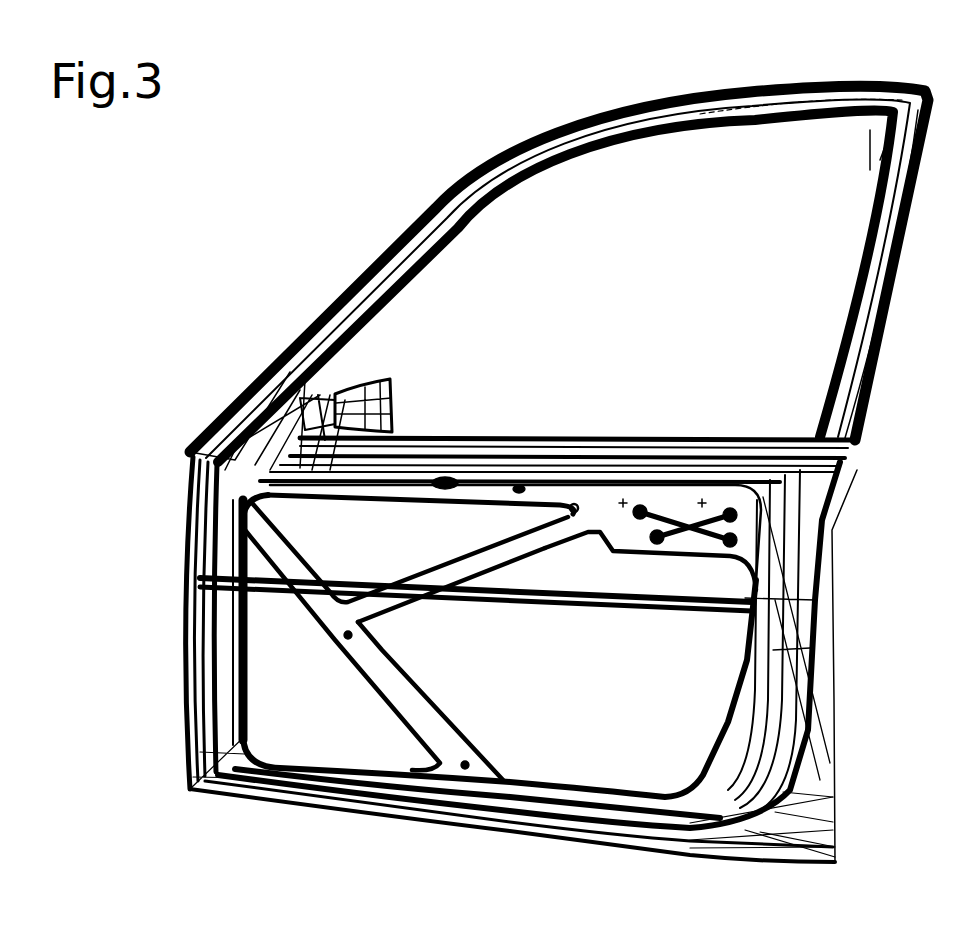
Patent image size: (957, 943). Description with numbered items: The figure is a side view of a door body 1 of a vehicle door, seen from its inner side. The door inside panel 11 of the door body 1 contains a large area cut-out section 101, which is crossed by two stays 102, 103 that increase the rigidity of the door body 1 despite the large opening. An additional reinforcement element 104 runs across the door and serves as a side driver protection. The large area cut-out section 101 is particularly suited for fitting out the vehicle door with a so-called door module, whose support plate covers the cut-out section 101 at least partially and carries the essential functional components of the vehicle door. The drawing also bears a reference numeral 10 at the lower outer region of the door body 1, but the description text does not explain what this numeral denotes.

The door body 1 is at (291, 331).
The outer door panel 10 is at (830, 762).
The door inside panel 11 is at (752, 568).
The large area cut-out section 101 is at (563, 514).
The stay 102 is at (437, 728).
The stay 103 is at (448, 570).
The additional reinforcement element 104 is at (593, 612).